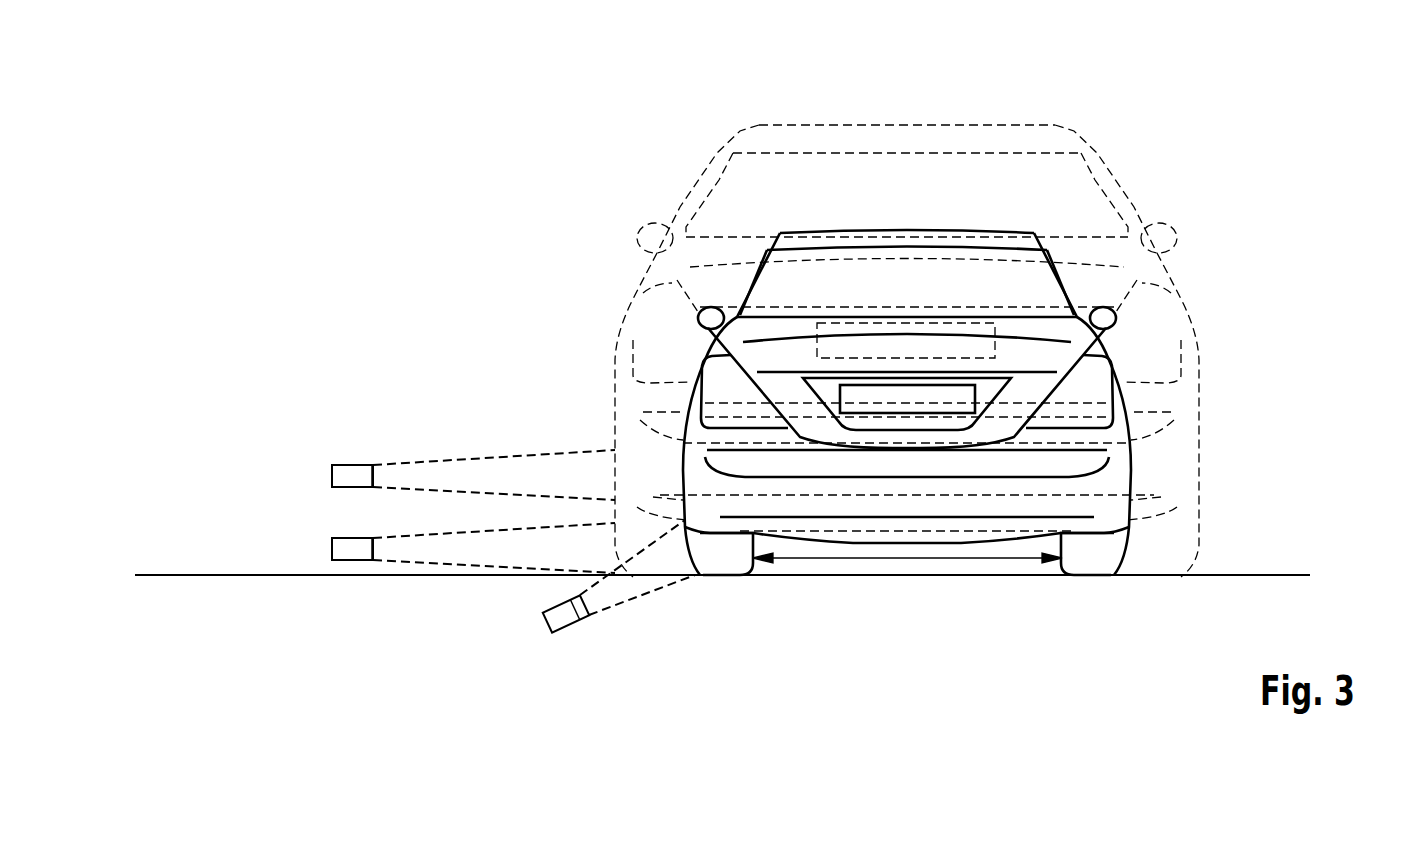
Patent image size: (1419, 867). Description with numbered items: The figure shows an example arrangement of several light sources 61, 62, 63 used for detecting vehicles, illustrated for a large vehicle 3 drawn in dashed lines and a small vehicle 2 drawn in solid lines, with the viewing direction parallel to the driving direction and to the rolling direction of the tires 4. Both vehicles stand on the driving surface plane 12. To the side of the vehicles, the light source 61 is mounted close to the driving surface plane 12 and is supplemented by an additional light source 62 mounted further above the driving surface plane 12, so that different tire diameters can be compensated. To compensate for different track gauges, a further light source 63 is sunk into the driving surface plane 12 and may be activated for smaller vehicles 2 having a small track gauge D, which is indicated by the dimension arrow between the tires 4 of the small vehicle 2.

The small vehicle 2 is at (1072, 218).
The large vehicle 3 is at (1057, 121).
The tires 4 is at (725, 567).
The driving surface plane 12 is at (885, 576).
The light source 61 is at (353, 552).
The additional light source 62 is at (353, 475).
The light source sunk into driving surface plane 63 is at (563, 620).
The track gauge D is at (907, 560).